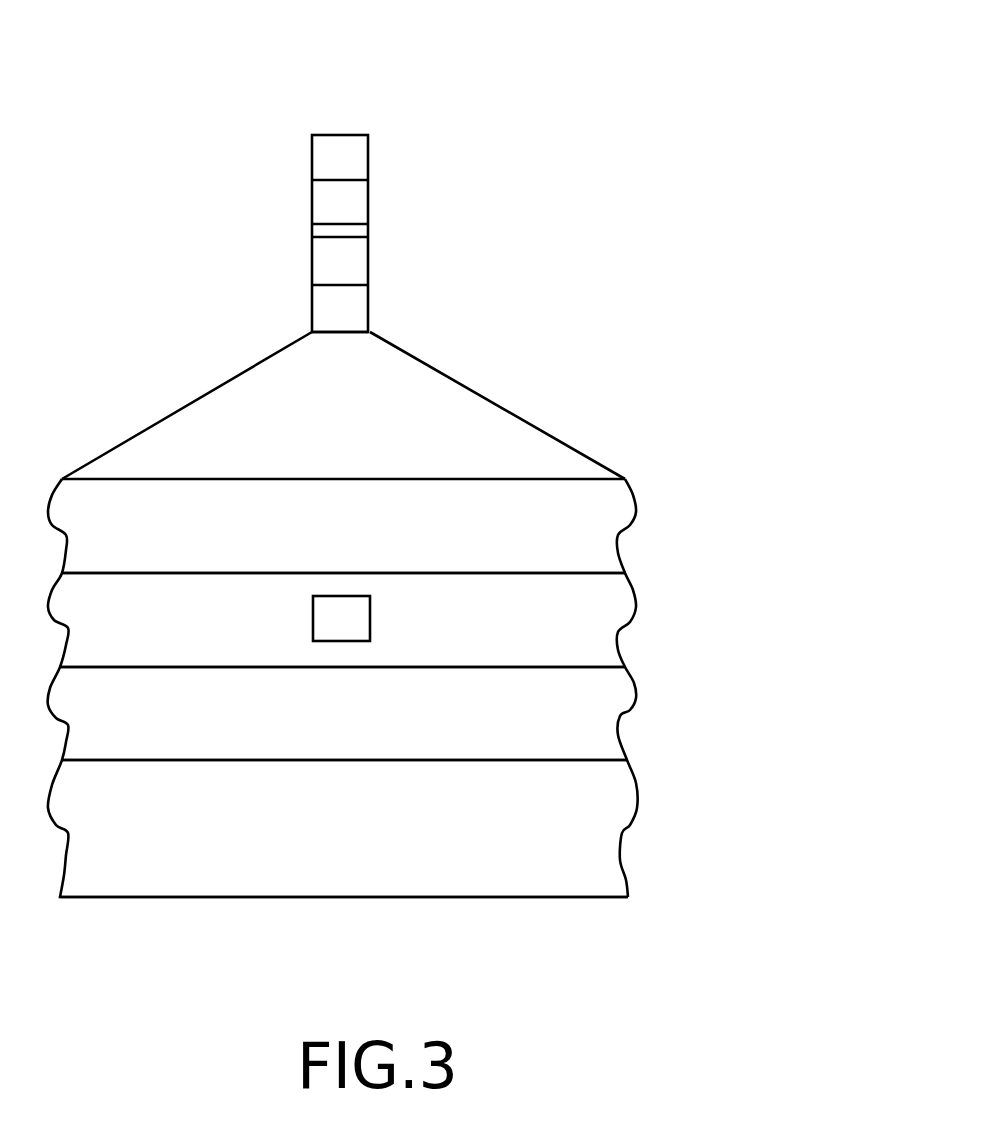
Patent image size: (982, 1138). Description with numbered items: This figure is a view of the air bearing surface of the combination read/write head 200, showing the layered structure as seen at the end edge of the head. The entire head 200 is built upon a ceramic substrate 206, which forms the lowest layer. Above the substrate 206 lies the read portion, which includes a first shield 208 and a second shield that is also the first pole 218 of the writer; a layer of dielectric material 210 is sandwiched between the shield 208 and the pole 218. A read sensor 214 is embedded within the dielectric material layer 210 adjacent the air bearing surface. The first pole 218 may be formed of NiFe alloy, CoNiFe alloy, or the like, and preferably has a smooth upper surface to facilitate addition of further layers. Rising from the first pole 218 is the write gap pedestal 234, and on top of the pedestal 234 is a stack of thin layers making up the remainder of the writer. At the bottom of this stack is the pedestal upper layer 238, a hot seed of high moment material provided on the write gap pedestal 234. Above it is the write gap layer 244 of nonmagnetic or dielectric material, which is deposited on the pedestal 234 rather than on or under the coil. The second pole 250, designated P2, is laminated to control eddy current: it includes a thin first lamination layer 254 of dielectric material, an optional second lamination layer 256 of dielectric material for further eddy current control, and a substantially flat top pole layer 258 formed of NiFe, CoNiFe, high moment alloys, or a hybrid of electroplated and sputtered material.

The combination read/write head 200 is at (744, 389).
The ceramic substrate 206 is at (140, 845).
The first shield 208 is at (140, 728).
The dielectric material layer 210 is at (140, 634).
The read sensor 214 is at (370, 614).
The first pole 218 is at (140, 538).
The write gap pedestal 234 is at (452, 430).
The pedestal upper layer 238 is at (312, 309).
The write gap layer 244 is at (312, 263).
The second pole 250 is at (340, 108).
The first lamination layer 254 is at (312, 229).
The second lamination layer 256 is at (312, 203).
The top pole layer 258 is at (312, 153).
The second pole P2 is at (382, 128).